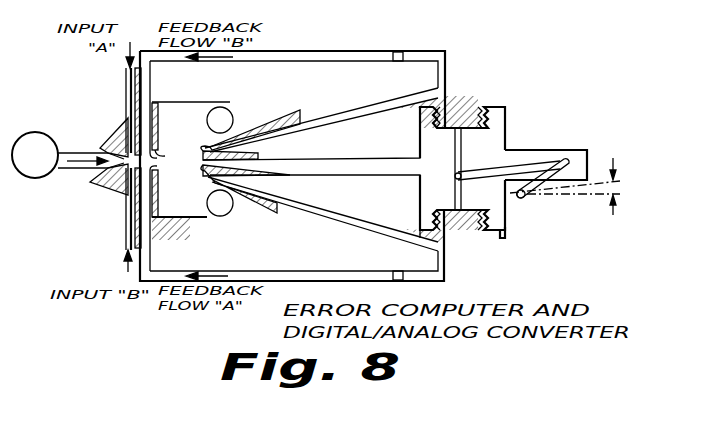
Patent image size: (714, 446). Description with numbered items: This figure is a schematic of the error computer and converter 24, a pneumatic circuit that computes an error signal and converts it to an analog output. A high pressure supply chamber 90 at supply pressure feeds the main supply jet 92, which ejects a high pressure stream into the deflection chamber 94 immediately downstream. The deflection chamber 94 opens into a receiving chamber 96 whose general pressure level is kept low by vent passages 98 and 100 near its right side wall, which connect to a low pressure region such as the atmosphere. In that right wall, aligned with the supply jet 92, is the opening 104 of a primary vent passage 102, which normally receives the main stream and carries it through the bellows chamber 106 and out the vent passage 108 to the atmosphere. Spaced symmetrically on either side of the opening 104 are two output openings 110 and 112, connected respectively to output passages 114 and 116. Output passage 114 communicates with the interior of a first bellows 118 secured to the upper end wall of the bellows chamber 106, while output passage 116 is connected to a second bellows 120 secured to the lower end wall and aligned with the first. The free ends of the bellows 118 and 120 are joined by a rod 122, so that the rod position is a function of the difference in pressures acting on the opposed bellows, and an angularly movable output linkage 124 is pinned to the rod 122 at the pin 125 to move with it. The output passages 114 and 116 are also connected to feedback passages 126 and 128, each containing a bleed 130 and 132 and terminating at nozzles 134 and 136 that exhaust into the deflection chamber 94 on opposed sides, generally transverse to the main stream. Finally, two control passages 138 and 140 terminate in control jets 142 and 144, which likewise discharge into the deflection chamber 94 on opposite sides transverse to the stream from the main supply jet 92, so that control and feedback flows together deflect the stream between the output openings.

The error computer and converter 24 is at (451, 62).
The high pressure supply chamber 90 is at (31, 178).
The main supply jet 92 is at (112, 150).
The deflection chamber 94 is at (123, 192).
The receiving chamber 96 is at (168, 102).
The vent passage 98 is at (233, 116).
The vent passage 100 is at (236, 202).
The primary vent passage 102 is at (308, 160).
The opening 104 is at (244, 172).
The bellows chamber 106 is at (496, 163).
The vent passage 108 is at (500, 236).
The output opening 110 is at (246, 153).
The output opening 112 is at (211, 181).
The output passage 114 is at (305, 121).
The output passage 116 is at (322, 212).
The first bellows 118 is at (487, 122).
The second bellows 120 is at (487, 232).
The rod 122 is at (453, 147).
The output linkage 124 is at (563, 160).
The pin 125 is at (462, 180).
The feedback passage 126 is at (324, 50).
The feedback passage 128 is at (323, 281).
The bleed 130 is at (401, 50).
The bleed 132 is at (402, 270).
The nozzle 134 is at (165, 152).
The nozzle 136 is at (125, 236).
The control passage 138 is at (127, 74).
The control passage 140 is at (125, 251).
The control jet 142 is at (123, 150).
The control jet 144 is at (109, 183).